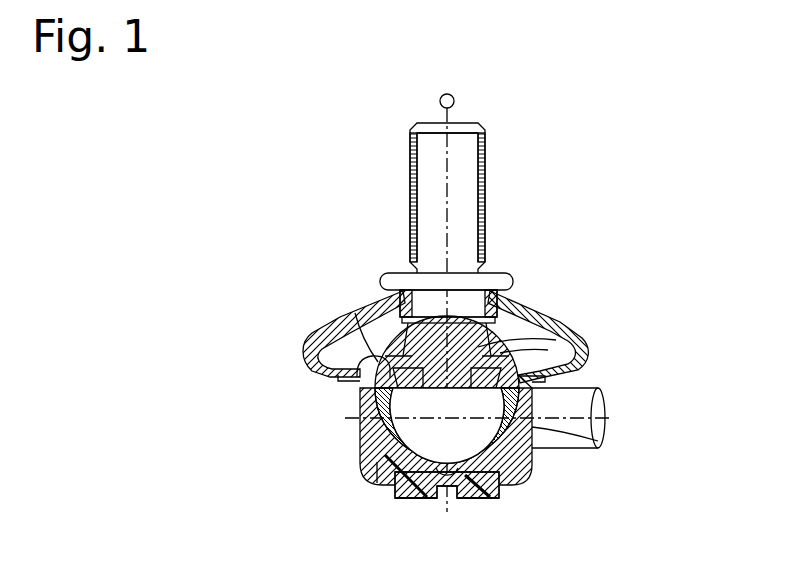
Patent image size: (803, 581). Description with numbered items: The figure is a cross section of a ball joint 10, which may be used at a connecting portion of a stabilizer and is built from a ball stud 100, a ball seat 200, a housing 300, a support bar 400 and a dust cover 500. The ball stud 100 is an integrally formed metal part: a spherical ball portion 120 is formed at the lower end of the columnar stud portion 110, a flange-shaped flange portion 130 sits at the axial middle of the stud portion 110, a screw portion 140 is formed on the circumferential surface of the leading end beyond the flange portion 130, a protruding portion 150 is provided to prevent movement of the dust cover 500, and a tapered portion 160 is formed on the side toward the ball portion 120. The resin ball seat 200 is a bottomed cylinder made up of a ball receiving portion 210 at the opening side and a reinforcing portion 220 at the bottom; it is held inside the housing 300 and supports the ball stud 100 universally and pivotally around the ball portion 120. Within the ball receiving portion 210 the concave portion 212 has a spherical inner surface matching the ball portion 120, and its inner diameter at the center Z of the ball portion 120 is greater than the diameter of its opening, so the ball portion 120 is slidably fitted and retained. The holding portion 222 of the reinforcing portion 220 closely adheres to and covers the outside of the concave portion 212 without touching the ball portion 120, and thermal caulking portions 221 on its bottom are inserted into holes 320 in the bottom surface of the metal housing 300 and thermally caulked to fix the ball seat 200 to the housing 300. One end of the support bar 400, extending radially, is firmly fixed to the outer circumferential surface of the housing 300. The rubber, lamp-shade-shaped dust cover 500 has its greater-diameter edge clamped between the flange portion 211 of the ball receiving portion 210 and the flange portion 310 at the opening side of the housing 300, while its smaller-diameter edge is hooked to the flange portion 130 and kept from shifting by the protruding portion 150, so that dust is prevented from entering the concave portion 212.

The ball joint 10 is at (292, 333).
The ball stud 100 is at (494, 207).
The stud portion 110 is at (430, 194).
The ball portion 120 is at (560, 437).
The flange portion 130 is at (505, 285).
The screw portion 140 is at (487, 155).
The protruding portion 150 is at (531, 314).
The tapered portion 160 is at (548, 342).
The ball seat 200 is at (385, 416).
The ball receiving portion 210 is at (392, 350).
The flange portion 211 is at (322, 345).
The concave portion 212 is at (375, 482).
The reinforcing portion 220 is at (505, 455).
The thermal caulking portions 221 is at (415, 498).
The holding portion 222 is at (560, 372).
The housing 300 is at (365, 442).
The flange portion 310 is at (345, 381).
The holes 320 is at (388, 480).
The support bar 400 is at (588, 402).
The dust cover 500 is at (360, 327).
The center of the ball portion Z is at (492, 417).